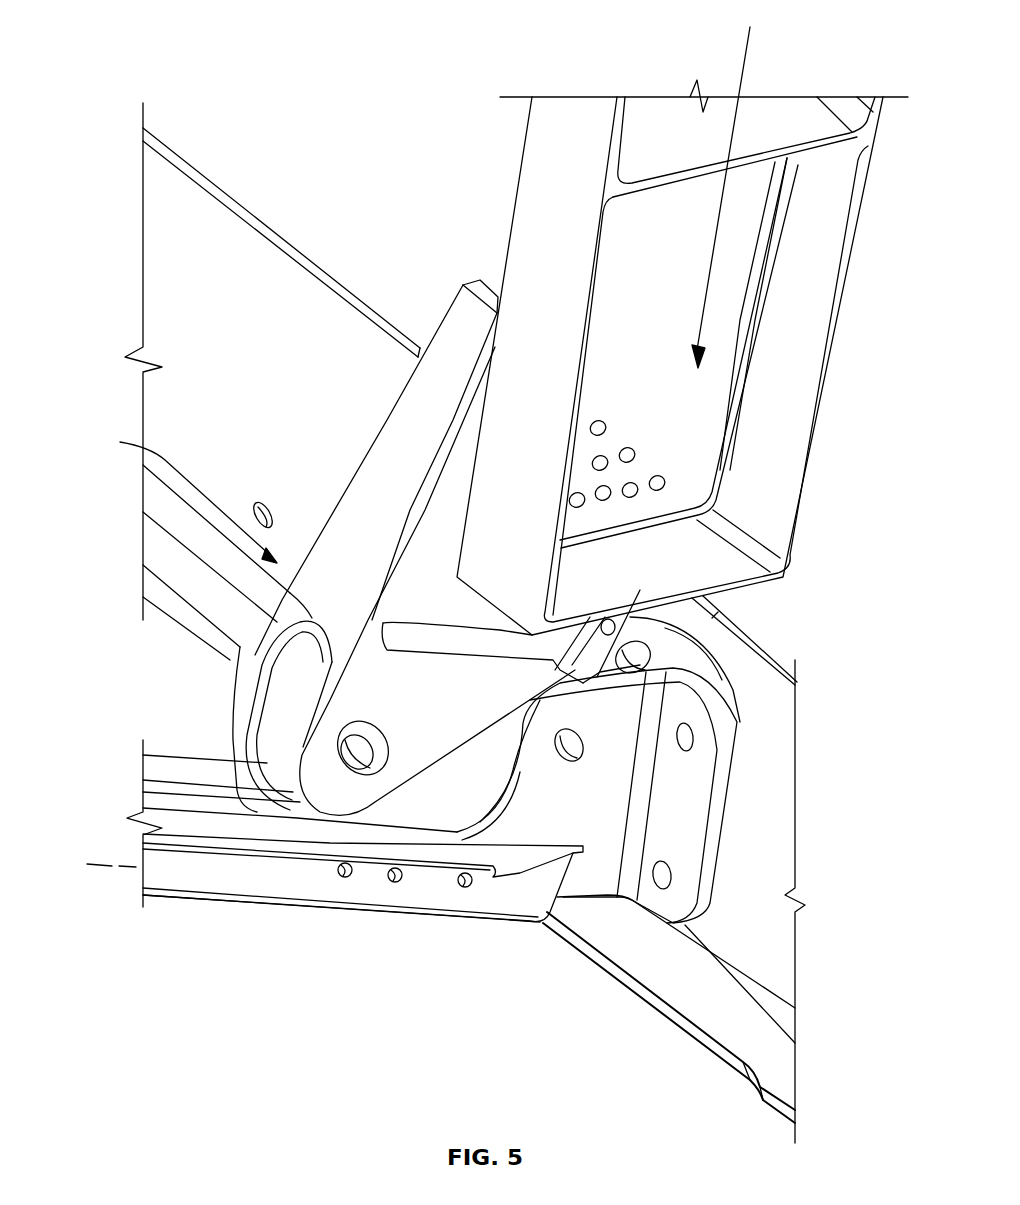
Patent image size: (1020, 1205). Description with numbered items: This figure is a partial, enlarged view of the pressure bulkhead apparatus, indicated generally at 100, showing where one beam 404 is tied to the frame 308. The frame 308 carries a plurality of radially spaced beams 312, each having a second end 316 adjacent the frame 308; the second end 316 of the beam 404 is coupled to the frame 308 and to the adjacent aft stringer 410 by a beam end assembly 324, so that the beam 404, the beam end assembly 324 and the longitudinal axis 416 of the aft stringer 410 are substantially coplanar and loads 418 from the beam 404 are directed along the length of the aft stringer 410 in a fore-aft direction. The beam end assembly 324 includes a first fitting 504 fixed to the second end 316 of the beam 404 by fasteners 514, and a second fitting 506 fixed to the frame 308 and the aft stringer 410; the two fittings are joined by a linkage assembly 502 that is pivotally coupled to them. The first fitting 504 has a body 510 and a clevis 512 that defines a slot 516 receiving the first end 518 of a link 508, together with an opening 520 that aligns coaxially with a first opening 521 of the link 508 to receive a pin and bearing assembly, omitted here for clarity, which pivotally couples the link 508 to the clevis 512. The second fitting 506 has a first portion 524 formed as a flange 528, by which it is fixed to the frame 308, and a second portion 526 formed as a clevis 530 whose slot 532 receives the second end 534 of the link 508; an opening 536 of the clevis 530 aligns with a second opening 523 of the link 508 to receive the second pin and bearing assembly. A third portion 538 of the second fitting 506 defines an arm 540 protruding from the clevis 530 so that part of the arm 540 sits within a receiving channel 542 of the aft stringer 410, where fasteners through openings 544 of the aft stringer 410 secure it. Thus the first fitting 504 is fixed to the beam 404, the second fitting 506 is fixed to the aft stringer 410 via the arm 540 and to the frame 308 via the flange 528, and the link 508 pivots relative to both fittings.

The aircraft structural assembly 100 is at (298, 56).
The frame 308 is at (243, 240).
The beams 312 is at (537, 154).
The beam 404 is at (530, 197).
The loads 418 is at (718, 235).
The second end 316 is at (713, 557).
The fasteners 514 is at (598, 420).
The first fitting 504 is at (403, 405).
The body 510 is at (440, 500).
The opening 520 is at (380, 718).
The first opening 521 is at (380, 757).
The beam end assembly 324 is at (176, 497).
The slot 516 is at (263, 658).
The clevis 512 is at (262, 690).
The first end 518 is at (265, 722).
The receiving channel 542 is at (180, 800).
The aft stringer 410 is at (262, 887).
The openings 544 is at (392, 887).
The longitudinal axis 416 is at (113, 868).
The third portion 538 is at (341, 910).
The arm 540 is at (400, 818).
The link 508 is at (452, 777).
The linkage assembly 502 is at (483, 778).
The first portion 524 is at (690, 795).
The flange 528 is at (725, 762).
The second portion 526 is at (741, 742).
The clevis 530 is at (605, 820).
The second opening 523 is at (574, 756).
The slot 532 is at (705, 607).
The second end 534 is at (652, 660).
The opening 536 is at (640, 712).
The second fitting 506 is at (663, 903).